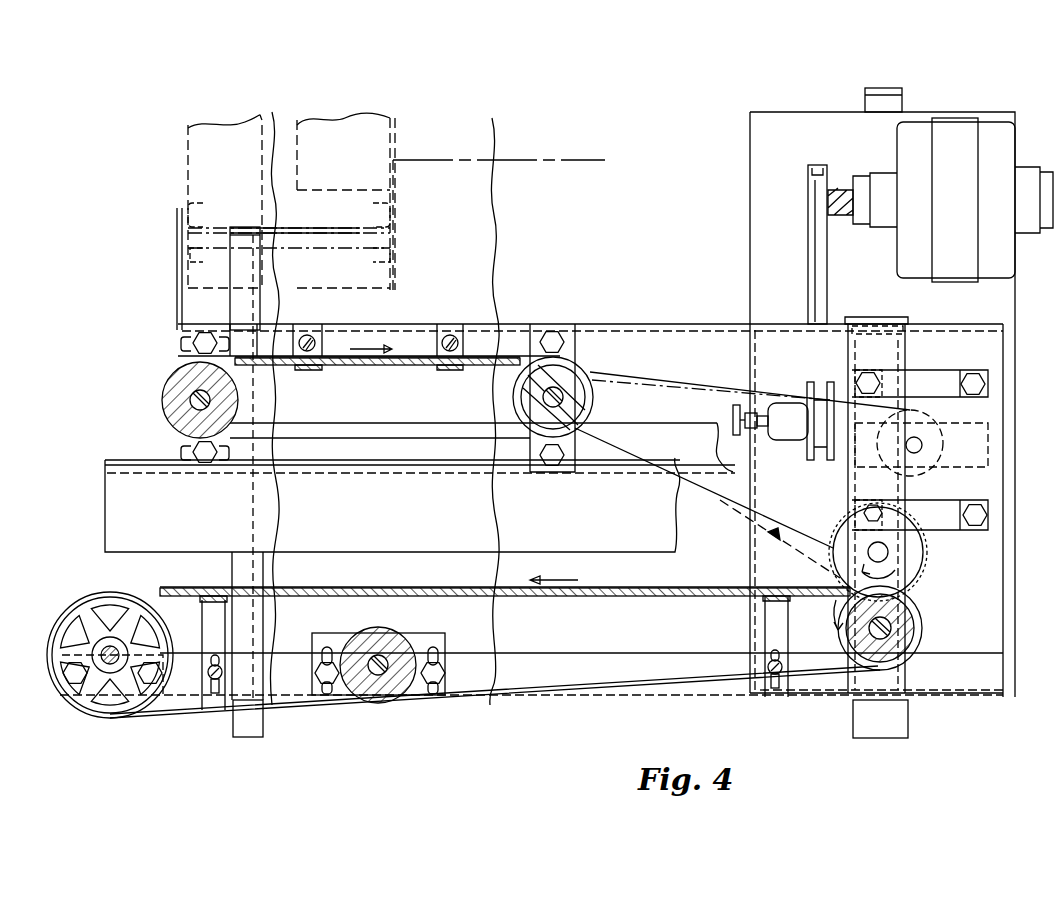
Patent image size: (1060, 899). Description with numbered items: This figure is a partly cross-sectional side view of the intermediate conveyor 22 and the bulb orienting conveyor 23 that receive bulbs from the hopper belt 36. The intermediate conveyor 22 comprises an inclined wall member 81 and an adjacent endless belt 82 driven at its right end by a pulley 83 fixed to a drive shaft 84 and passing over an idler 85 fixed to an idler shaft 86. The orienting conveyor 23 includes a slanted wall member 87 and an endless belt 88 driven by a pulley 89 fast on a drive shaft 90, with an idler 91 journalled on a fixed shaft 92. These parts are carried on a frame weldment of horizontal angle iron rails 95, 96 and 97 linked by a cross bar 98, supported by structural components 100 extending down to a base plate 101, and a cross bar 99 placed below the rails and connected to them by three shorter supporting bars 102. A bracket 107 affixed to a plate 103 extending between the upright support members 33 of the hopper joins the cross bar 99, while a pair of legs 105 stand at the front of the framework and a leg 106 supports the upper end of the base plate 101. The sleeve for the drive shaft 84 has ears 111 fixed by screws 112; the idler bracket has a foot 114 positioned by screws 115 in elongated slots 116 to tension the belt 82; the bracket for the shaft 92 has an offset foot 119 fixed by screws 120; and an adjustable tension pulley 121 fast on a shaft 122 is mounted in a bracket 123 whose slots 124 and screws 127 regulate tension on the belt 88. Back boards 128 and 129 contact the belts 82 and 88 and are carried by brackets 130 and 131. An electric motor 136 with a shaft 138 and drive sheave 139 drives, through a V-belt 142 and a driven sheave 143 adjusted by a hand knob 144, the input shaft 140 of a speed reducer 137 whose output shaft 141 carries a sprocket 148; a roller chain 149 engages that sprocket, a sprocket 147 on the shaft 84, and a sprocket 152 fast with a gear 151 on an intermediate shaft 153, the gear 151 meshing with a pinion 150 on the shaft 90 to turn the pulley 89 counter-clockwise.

The intermediate conveyor 22 is at (581, 137).
The bulb orienting conveyor 23 is at (471, 737).
The upright support members 33 is at (380, 218).
The belt 36 is at (392, 121).
The inclined wall member 81 is at (480, 170).
The endless belt 82 is at (420, 352).
The pulley 83 is at (514, 397).
The drive shaft 84 is at (568, 380).
The idler 85 is at (165, 392).
The idler shaft 86 is at (190, 402).
The slanted wall member 87 is at (617, 526).
The endless belt 88 is at (660, 579).
The pulley 89 is at (846, 634).
The drive shaft 90 is at (892, 630).
The idler 91 is at (172, 610).
The fixed shaft 92 is at (100, 640).
The angle iron rail 95 is at (676, 372).
The angle iron rail 96 is at (700, 432).
The angle iron rail 97 is at (620, 653).
The cross bar 98 is at (848, 488).
The cross bar 99 is at (232, 572).
The structural components 100 is at (870, 317).
The base plate 101 is at (750, 228).
The supporting bars 102 is at (262, 322).
The plate 103 is at (325, 227).
The legs 105 is at (255, 737).
The leg 106 is at (890, 88).
The bracket 107 is at (233, 226).
The ears 111 is at (575, 452).
The screws 112 is at (560, 330).
The foot 114 is at (190, 450).
The screws 115 is at (205, 332).
The elongated slots 116 is at (182, 344).
The offset foot 119 is at (150, 672).
The screws 120 is at (75, 685).
The adjustable tension pulley 121 is at (378, 628).
The shaft 122 is at (375, 660).
The bracket 123 is at (430, 633).
The slots 124 is at (325, 648).
The screws 127 is at (330, 686).
The back board 128 is at (345, 372).
The back board 129 is at (425, 582).
The brackets 130 is at (322, 340).
The brackets 131 is at (214, 690).
The electric motor 136 is at (968, 120).
The speed reducer 137 is at (988, 402).
The shaft 138 is at (840, 188).
The drive sheave 139 is at (808, 195).
The input shaft 140 is at (850, 400).
The output shaft 141 is at (923, 445).
The V-belt 142 is at (808, 272).
The driven sheave 143 is at (807, 390).
The hand knob 144 is at (740, 440).
The sprocket 147 is at (588, 400).
The sprocket 148 is at (918, 476).
The roller chain 149 is at (730, 518).
The pinion 150 is at (915, 605).
The gear 151 is at (840, 528).
The sprocket 152 is at (833, 563).
The intermediate shaft 153 is at (888, 552).